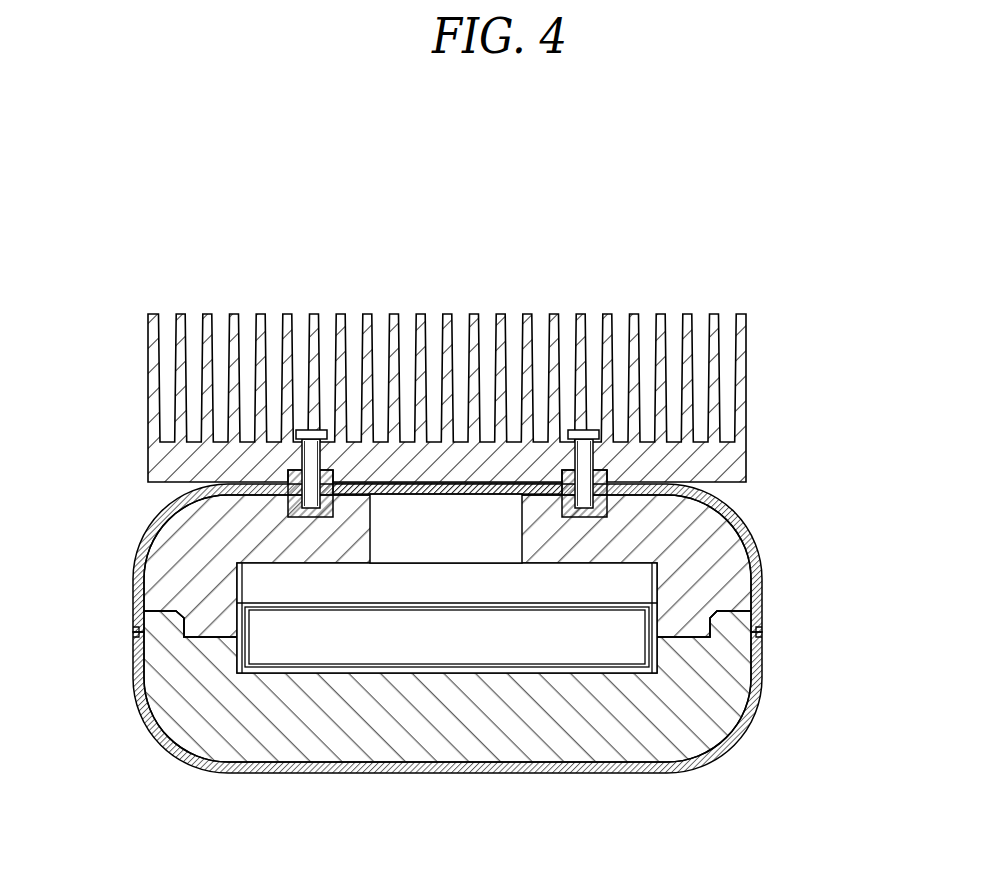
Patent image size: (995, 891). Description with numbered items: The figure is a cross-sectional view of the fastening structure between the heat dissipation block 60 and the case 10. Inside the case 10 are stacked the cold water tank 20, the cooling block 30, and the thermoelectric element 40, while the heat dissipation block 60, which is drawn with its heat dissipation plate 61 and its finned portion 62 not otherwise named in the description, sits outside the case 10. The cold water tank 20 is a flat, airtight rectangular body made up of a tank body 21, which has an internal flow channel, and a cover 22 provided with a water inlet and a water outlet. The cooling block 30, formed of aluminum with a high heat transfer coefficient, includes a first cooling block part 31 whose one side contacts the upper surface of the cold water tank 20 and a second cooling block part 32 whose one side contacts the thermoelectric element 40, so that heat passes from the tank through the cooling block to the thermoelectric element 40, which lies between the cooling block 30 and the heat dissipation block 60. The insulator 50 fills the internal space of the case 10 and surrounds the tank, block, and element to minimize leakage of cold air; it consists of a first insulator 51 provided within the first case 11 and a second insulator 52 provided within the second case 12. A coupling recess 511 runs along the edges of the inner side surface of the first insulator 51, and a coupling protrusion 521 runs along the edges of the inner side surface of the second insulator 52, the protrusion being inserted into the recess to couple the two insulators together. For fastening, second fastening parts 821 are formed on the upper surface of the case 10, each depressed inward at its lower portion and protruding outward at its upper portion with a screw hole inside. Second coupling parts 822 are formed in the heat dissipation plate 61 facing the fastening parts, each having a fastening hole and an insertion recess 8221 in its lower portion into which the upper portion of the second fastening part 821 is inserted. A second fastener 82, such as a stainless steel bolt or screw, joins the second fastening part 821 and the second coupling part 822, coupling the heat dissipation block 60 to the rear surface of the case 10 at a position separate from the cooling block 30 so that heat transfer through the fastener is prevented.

The case 10 is at (385, 628).
The first case 11 is at (407, 700).
The second case 12 is at (133, 595).
The cold water tank 20 is at (447, 749).
The tank body 21 is at (528, 645).
The cover 22 is at (593, 672).
The cooling block 30 is at (447, 692).
The first cooling block part 31 is at (393, 585).
The second cooling block part 32 is at (445, 540).
The thermoelectric element 40 is at (452, 488).
The insulator 50 is at (447, 659).
The first insulator 51 is at (485, 723).
The coupling recess 511 is at (184, 639).
The second insulator 52 is at (713, 572).
The coupling protrusion 521 is at (688, 632).
The heat dissipation block 60 is at (517, 398).
The heat dissipation plate 61 is at (495, 462).
The heat sink fins 62 is at (746, 380).
The second fastener 82 is at (310, 459).
The second fastening part 821 is at (297, 508).
The second coupling part 822 is at (593, 457).
The insertion recess 8221 is at (607, 483).